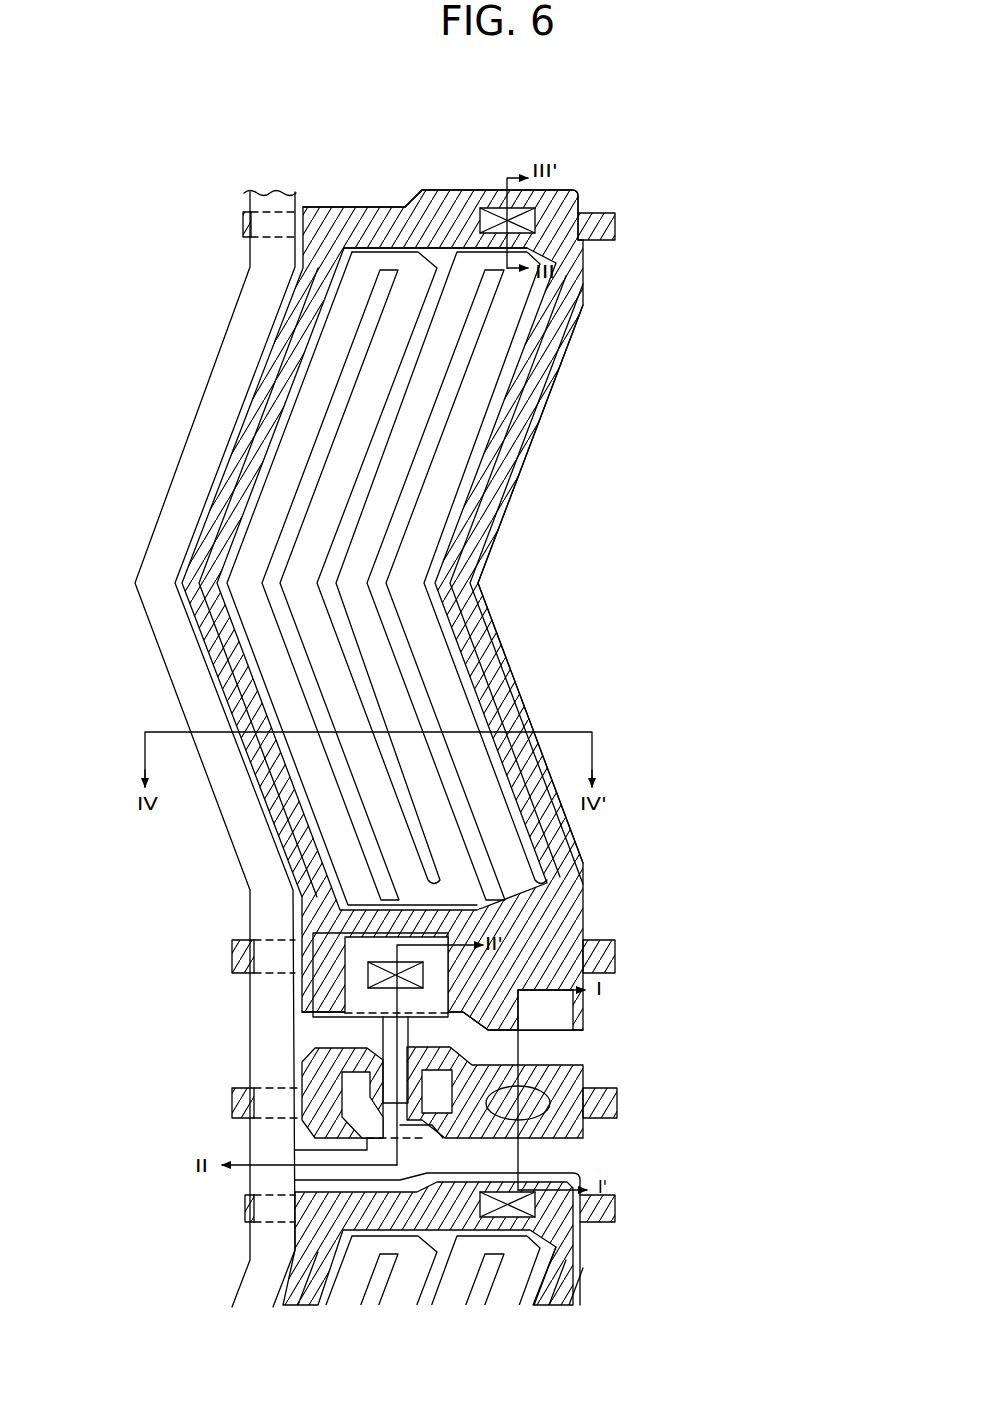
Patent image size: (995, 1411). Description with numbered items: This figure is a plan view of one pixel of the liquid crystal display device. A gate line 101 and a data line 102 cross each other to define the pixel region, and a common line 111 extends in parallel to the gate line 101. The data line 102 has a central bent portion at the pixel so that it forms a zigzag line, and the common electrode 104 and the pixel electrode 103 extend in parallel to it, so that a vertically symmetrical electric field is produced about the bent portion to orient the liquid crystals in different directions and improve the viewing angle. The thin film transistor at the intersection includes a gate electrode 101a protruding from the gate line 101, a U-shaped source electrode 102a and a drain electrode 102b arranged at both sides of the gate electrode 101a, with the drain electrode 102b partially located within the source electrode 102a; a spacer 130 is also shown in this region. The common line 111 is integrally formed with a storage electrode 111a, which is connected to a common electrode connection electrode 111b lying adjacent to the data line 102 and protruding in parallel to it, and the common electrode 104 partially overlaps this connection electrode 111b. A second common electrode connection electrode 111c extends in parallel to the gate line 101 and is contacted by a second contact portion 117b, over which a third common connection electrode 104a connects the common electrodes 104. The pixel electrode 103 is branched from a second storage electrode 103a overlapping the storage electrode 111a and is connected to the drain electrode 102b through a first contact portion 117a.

The gate line 101 is at (230, 1128).
The gate electrode 101a is at (420, 1045).
The data line 102 is at (240, 863).
The source electrode 102a is at (435, 1138).
The drain electrode 102b is at (343, 955).
The pixel electrode 103 is at (488, 428).
The second storage electrode 103a is at (578, 992).
The common electrode 104 is at (233, 703).
The third common connection electrode 104a is at (485, 188).
The common line 111 is at (232, 977).
The storage electrode 111a is at (590, 1022).
The common electrode connection electrode 111b is at (573, 848).
The second common electrode connection electrode 111c is at (458, 198).
The first contact portion 117a is at (370, 980).
The second contact portion 117b is at (575, 198).
The spacer 130 is at (570, 1077).